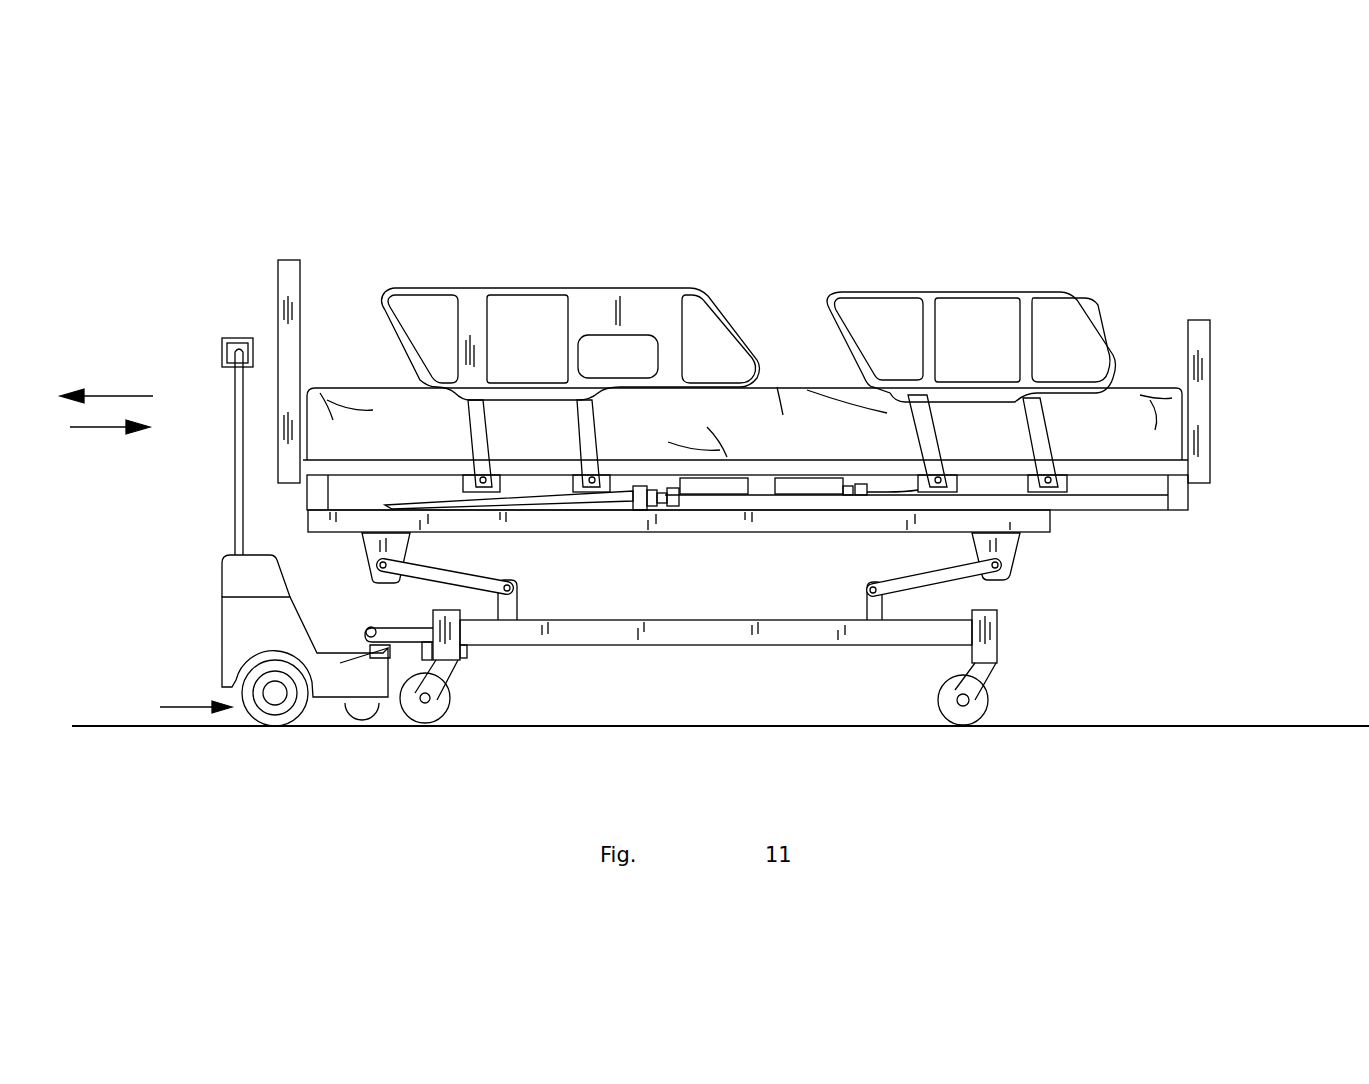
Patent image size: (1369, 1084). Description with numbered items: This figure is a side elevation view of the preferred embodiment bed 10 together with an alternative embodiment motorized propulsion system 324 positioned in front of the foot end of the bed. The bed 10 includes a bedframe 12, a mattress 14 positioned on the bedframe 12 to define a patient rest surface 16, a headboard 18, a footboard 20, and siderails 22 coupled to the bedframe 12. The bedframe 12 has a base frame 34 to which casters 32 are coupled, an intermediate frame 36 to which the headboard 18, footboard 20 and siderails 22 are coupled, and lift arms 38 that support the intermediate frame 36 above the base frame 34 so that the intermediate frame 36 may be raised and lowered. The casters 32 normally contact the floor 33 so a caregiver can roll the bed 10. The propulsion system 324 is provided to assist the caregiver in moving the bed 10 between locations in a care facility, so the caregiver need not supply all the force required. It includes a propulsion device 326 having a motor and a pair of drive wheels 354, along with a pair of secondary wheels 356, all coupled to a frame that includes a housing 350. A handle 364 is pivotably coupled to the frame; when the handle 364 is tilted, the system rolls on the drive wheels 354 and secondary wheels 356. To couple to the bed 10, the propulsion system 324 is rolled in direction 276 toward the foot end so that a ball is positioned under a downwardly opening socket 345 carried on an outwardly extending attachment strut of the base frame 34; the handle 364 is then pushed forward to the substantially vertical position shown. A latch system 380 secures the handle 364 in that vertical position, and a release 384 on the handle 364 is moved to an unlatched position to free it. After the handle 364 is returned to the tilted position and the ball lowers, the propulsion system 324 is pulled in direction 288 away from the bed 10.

The bed 10 is at (888, 195).
The bedframe 12 is at (1060, 618).
The mattress 14 is at (778, 398).
The patient rest surface 16 is at (1130, 390).
The headboard 18 is at (300, 275).
The footboard 20 is at (1199, 332).
The siderails 22 is at (590, 302).
The casters 32 is at (450, 693).
The floor 33 is at (736, 725).
The base frame 34 is at (692, 628).
The intermediate frame 36 is at (740, 532).
The lift arms 38 is at (480, 578).
The direction 276 is at (85, 427).
The direction 288 is at (110, 396).
The motorized propulsion system 324 is at (158, 632).
The propulsion device 326 is at (171, 706).
The socket 345 is at (367, 627).
The housing 350 is at (222, 648).
The drive wheels 354 is at (268, 728).
The secondary wheels 356 is at (362, 727).
The handle 364 is at (235, 520).
The latch system 380 is at (198, 307).
The release 384 is at (245, 323).